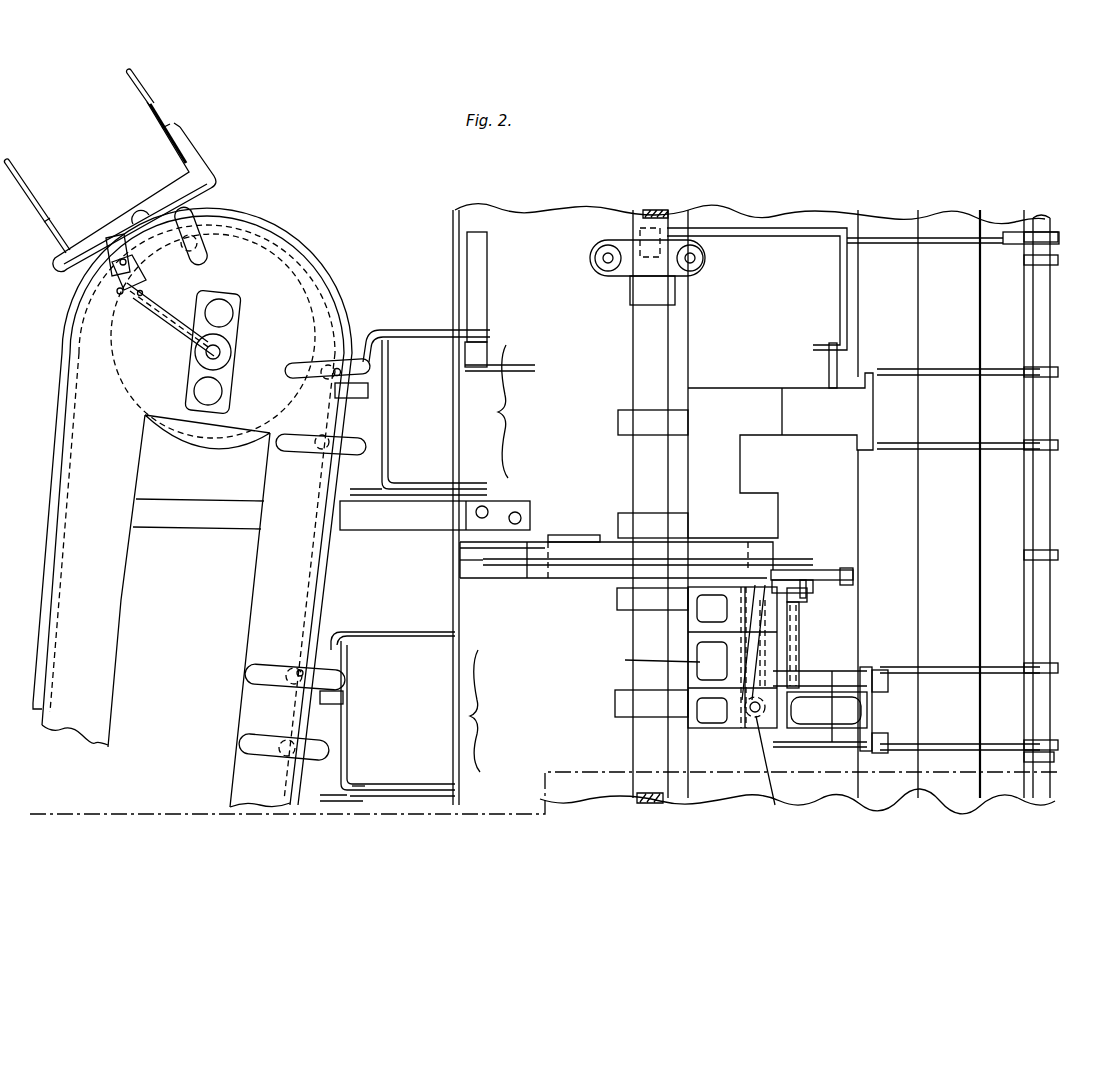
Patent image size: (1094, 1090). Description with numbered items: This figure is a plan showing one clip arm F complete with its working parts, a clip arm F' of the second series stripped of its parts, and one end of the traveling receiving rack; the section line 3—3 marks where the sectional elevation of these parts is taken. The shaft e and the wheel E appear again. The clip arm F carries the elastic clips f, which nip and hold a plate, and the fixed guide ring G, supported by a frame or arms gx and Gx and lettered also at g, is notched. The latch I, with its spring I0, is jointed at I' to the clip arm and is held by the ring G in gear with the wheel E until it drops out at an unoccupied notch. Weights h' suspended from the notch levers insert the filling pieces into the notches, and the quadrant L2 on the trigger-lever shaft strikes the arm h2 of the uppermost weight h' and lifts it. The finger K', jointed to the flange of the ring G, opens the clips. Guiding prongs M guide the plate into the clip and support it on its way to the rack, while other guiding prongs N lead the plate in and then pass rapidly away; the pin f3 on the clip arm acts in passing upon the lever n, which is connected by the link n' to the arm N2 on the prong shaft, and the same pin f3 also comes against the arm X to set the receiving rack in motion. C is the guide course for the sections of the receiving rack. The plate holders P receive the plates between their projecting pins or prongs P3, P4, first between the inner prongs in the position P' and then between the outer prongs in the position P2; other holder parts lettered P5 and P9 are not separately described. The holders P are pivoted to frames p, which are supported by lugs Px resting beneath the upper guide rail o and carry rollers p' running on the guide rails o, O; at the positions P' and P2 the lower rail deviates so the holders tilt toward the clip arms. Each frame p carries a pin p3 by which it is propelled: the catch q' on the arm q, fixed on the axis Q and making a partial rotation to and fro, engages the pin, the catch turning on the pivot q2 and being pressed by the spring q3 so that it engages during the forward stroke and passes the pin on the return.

The curved guide rail O is at (58, 454).
The guide rail o is at (300, 254).
The guide course C is at (166, 611).
The axis Q is at (232, 354).
The arm q is at (170, 324).
The catch q' is at (138, 272).
The pivot of the latch q2 is at (119, 297).
The spring q3 is at (170, 318).
The plate holder P is at (137, 184).
The bar rod P9 is at (140, 97).
The projecting pins or prongs P4 is at (232, 472).
The projecting pins or prongs P3 is at (162, 132).
The bracket end P5 is at (363, 777).
The projecting lug Px is at (122, 228).
The roller p' is at (234, 437).
The pin p3 is at (106, 268).
The frame p is at (320, 540).
The plate holder position P' is at (440, 507).
The plate holder position P2 is at (427, 572).
The arm X is at (497, 338).
The section line 3 is at (542, 794).
The guiding prong N is at (1072, 292).
The arm N2 is at (1010, 232).
The link n' is at (874, 249).
The lever n is at (757, 289).
The pin f3 is at (829, 366).
The frame or arms Gx is at (647, 266).
The shaft e is at (651, 506).
The clip arm of the second series F' is at (780, 455).
The fixed guide ring G is at (616, 560).
The rod g is at (603, 580).
The frame or arms gx is at (468, 576).
The wheel E is at (580, 580).
The clip arm F is at (675, 670).
The latch I is at (732, 656).
The spring I0 is at (650, 659).
The joint I' is at (767, 768).
The finger K' is at (820, 568).
The weight h' is at (820, 580).
The arm h2 is at (810, 596).
The quadrant L2 is at (801, 612).
The guiding prong M is at (808, 680).
The clip f is at (880, 688).